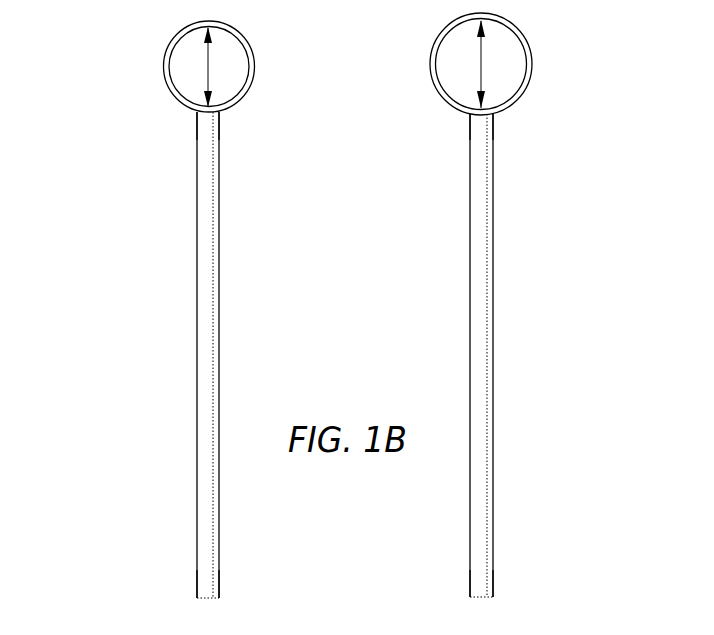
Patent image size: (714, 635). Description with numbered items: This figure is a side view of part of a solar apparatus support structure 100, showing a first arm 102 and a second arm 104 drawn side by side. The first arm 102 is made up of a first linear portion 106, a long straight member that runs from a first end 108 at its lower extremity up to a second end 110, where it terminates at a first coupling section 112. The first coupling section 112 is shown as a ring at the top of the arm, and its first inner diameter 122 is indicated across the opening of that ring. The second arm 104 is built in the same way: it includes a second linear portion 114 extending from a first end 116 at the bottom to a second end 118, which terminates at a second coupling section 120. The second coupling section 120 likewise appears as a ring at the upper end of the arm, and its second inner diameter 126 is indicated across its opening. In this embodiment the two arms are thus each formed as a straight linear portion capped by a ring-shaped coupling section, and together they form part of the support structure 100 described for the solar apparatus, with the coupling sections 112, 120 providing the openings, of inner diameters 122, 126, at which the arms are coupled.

The solar apparatus support structure 100 is at (566, 226).
The first arm 102 is at (160, 311).
The second arm 104 is at (521, 327).
The first linear portion 106 is at (205, 463).
The first end 108 is at (219, 590).
The second end 110 is at (198, 114).
The first coupling section 112 is at (177, 33).
The second linear portion 114 is at (483, 393).
The first end 116 is at (493, 588).
The second end 118 is at (485, 122).
The second coupling section 120 is at (510, 24).
The first inner diameter 122 is at (207, 70).
The second inner diameter 126 is at (482, 60).